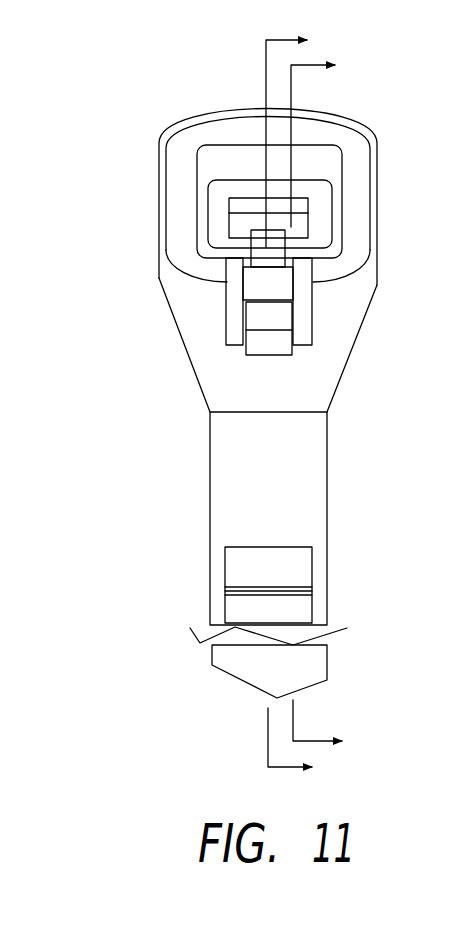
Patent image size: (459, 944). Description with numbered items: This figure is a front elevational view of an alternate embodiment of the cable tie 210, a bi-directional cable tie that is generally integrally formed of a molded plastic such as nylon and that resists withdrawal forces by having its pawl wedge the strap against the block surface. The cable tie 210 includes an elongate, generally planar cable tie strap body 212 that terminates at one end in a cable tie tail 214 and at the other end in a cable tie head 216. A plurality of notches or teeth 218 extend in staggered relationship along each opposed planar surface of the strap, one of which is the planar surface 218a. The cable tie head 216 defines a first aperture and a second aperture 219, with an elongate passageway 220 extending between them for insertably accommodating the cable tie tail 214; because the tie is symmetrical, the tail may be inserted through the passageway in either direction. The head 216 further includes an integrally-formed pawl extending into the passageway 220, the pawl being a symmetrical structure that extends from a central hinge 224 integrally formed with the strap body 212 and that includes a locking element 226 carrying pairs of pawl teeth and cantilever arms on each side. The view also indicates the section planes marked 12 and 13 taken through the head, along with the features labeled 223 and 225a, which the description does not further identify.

The cable tie 210 is at (218, 46).
The cable tie strap body 212 is at (328, 568).
The cable tie tail 214 is at (307, 688).
The cable tie head 216 is at (379, 217).
The teeth 218 is at (238, 603).
The planar surface 218a is at (218, 563).
The second aperture 219 is at (220, 190).
The elongate passageway 220 is at (318, 192).
The plunger 223 is at (277, 285).
The central hinge 224 is at (262, 282).
The guide 225a is at (273, 315).
The locking element 226 is at (235, 228).
The section line 12 is at (307, 402).
The section line 13 is at (334, 402).